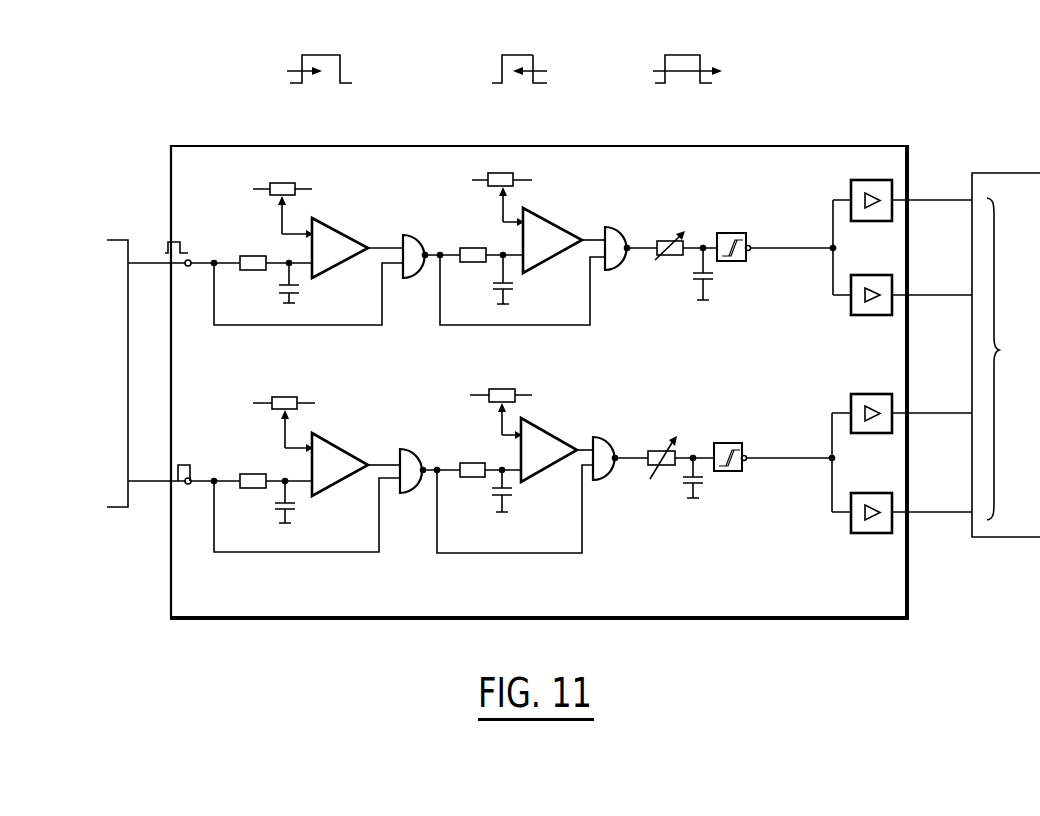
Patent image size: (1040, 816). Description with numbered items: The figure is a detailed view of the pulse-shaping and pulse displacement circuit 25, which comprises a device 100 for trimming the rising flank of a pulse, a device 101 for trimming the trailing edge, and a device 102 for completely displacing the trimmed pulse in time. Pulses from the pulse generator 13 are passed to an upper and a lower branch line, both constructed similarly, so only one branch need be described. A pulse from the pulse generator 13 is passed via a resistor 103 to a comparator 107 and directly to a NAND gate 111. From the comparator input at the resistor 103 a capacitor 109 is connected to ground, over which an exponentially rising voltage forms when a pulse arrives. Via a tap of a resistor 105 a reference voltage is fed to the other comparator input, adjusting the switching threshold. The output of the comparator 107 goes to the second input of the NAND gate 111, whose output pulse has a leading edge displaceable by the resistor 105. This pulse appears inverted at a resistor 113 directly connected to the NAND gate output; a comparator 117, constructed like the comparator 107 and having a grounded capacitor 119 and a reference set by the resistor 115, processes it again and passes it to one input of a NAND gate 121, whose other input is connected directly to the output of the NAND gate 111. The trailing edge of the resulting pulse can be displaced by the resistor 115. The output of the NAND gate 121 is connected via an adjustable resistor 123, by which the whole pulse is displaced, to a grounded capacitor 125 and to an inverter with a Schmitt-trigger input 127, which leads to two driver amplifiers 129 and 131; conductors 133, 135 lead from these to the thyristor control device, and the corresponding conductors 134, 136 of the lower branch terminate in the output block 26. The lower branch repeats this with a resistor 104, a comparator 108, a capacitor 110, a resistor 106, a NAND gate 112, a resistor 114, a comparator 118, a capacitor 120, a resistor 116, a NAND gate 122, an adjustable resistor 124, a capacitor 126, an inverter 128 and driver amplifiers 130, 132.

The pulse generator 13 is at (108, 373).
The circuit 25 is at (788, 153).
The output lines to drive circuit 26 is at (1006, 355).
The device for trimming the rising flank of a pulse 100 is at (368, 159).
The device for trimming the trailing edge of a pulse 101 is at (571, 159).
The device for completely displacing the trimmed pulse in time 102 is at (725, 160).
The resistor 103 is at (256, 253).
The resistor 104 is at (252, 474).
The resistor 105 is at (284, 183).
The resistor 106 is at (285, 397).
The comparator 107 is at (336, 229).
The comparator 108 is at (337, 444).
The capacitor 109 is at (297, 291).
The capacitor 110 is at (296, 508).
The NAND gate 111 is at (419, 238).
The NAND gate 112 is at (406, 449).
The resistor 113 is at (478, 248).
The resistor 114 is at (475, 463).
The resistor 115 is at (506, 174).
The resistor 116 is at (502, 389).
The comparator 117 is at (549, 221).
The comparator 118 is at (548, 428).
The capacitor 119 is at (511, 291).
The capacitor 120 is at (509, 494).
The NAND gate 121 is at (619, 234).
The NAND gate 122 is at (618, 439).
The adjustable resistor 123 is at (675, 229).
The adjustable resistor 124 is at (659, 474).
The capacitor 125 is at (710, 283).
The capacitor 126 is at (701, 487).
The inverter with Schmitt-trigger input 127 is at (731, 233).
The inverter with Schmitt-trigger input 128 is at (722, 443).
The amplifier 129 is at (855, 179).
The driver amplifier 130 is at (866, 393).
The amplifier 131 is at (866, 274).
The driver amplifier 132 is at (865, 492).
The conductor 133 is at (934, 198).
The output line 134 is at (934, 412).
The conductor 135 is at (934, 294).
The output line 136 is at (934, 511).